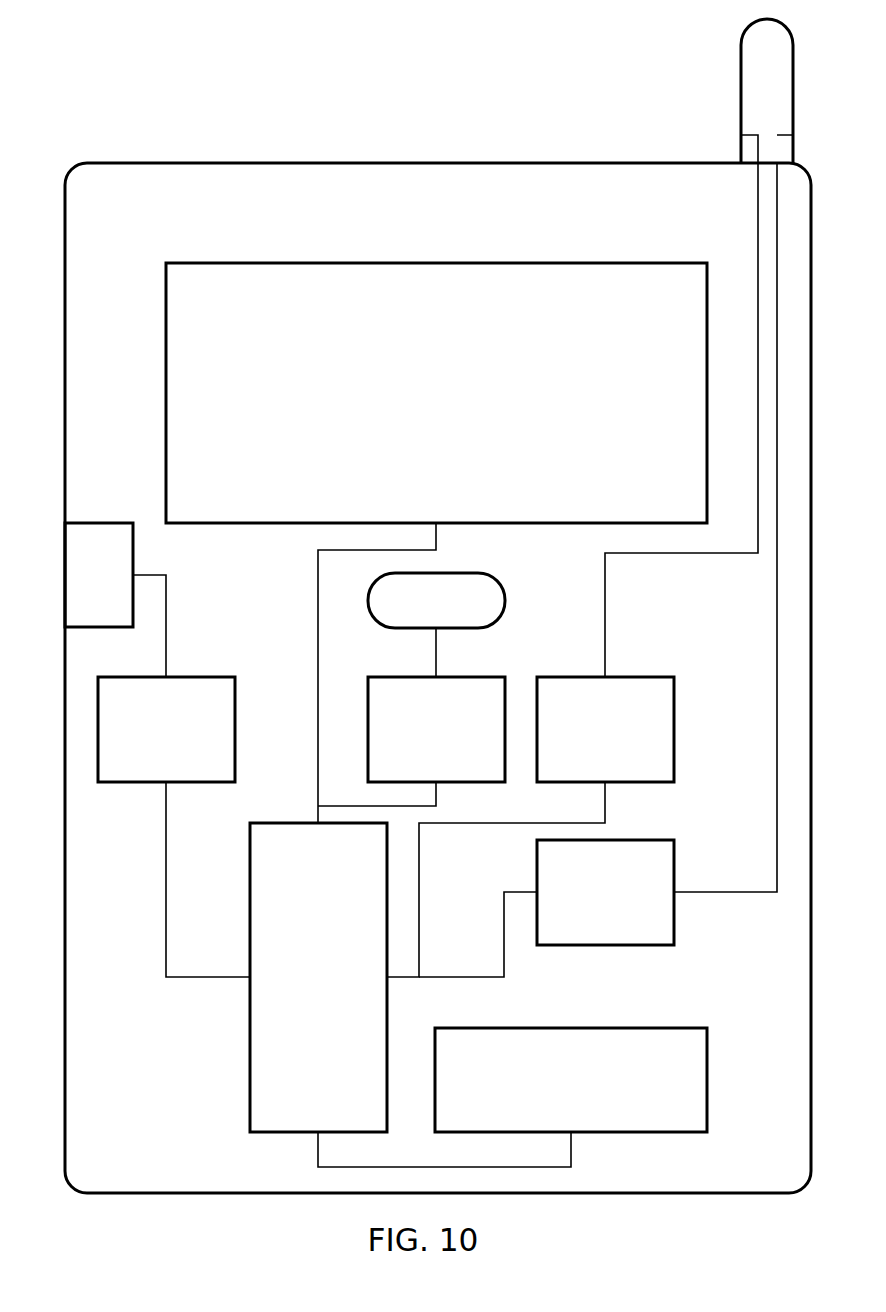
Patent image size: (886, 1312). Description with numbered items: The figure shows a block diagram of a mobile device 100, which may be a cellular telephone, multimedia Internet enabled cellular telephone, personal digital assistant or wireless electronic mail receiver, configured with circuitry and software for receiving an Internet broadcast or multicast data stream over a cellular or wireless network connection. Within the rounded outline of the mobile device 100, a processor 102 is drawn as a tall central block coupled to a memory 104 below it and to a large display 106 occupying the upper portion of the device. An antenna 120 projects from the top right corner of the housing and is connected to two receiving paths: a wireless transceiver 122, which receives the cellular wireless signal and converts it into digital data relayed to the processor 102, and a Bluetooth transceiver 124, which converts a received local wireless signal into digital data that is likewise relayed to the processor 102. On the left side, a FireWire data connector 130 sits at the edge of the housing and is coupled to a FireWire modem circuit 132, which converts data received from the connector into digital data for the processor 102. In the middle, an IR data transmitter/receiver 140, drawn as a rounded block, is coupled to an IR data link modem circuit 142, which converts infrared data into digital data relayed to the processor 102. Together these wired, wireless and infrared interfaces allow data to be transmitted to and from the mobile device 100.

The mobile device 100 is at (393, 161).
The antenna 120 is at (793, 68).
The display 106 is at (412, 397).
The FireWire data connector 130 is at (83, 591).
The FireWire modem circuit 132 is at (154, 737).
The IR data transmitter/receiver 140 is at (419, 617).
The IR data link modem circuit 142 is at (419, 744).
The wireless transceiver 122 is at (594, 742).
The Bluetooth transceiver 124 is at (594, 907).
The processor 102 is at (300, 997).
The memory 104 is at (552, 1092).